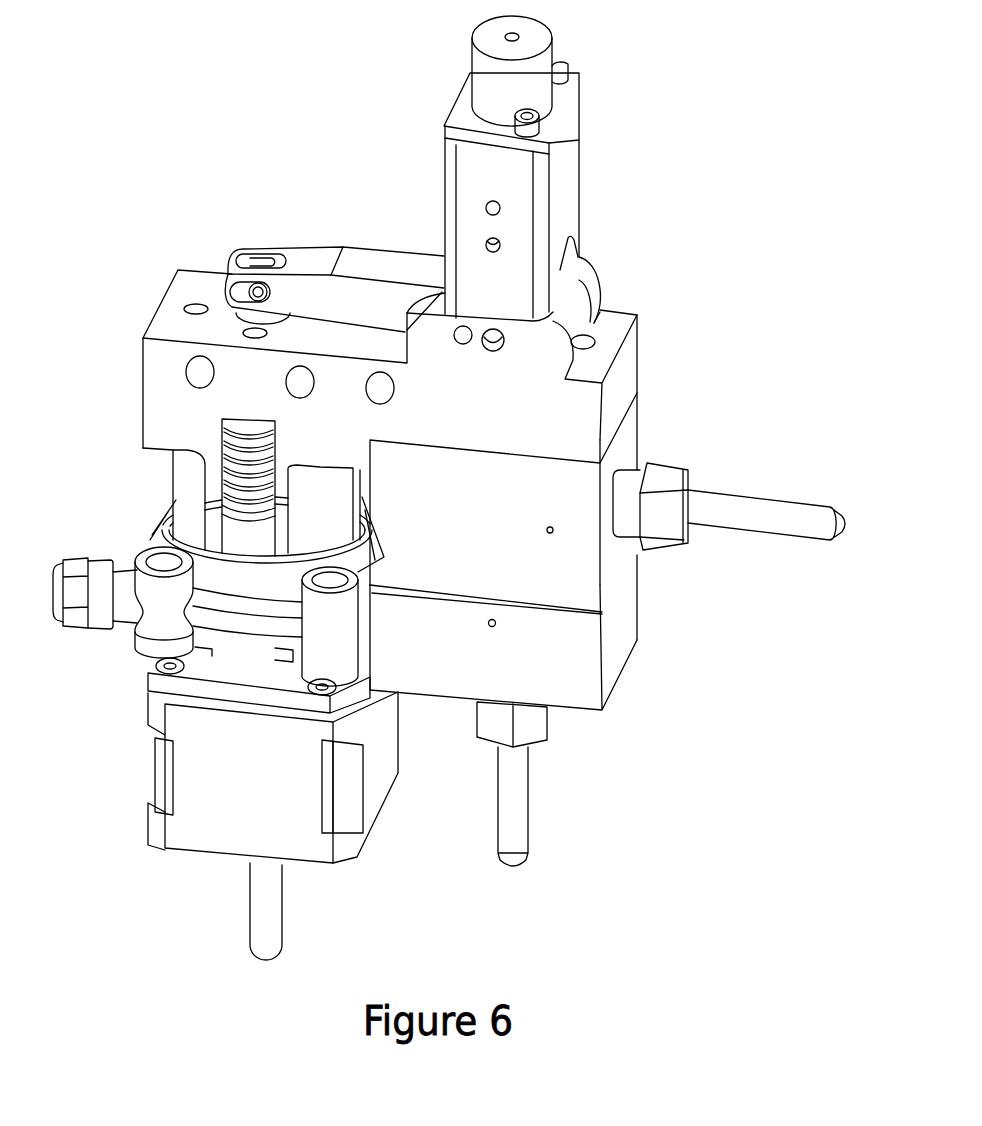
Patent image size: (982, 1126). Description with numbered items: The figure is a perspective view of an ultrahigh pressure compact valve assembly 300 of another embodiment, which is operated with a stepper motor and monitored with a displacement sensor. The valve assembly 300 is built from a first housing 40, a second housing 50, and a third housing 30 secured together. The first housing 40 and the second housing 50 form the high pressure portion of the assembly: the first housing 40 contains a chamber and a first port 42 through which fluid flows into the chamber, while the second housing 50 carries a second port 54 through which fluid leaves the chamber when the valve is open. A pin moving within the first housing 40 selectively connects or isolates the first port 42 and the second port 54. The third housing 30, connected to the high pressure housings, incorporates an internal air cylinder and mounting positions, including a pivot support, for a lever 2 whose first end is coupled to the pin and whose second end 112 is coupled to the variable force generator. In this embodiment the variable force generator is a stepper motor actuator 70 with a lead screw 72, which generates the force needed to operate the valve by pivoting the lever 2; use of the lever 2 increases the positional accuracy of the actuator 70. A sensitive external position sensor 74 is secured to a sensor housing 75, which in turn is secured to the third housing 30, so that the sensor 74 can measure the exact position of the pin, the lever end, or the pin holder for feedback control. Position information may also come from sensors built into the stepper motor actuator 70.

The valve assembly 300 is at (762, 116).
The external position sensor 74 is at (487, 80).
The sensor housing 75 is at (568, 162).
The lever 2 is at (413, 262).
The second end of the lever 112 is at (245, 247).
The third housing 30 is at (163, 412).
The first housing 40 is at (630, 427).
The first port 42 is at (690, 483).
The second housing 50 is at (630, 628).
The second port 54 is at (548, 725).
The stepper motor actuator 70 is at (215, 757).
The lead screw 72 is at (255, 907).